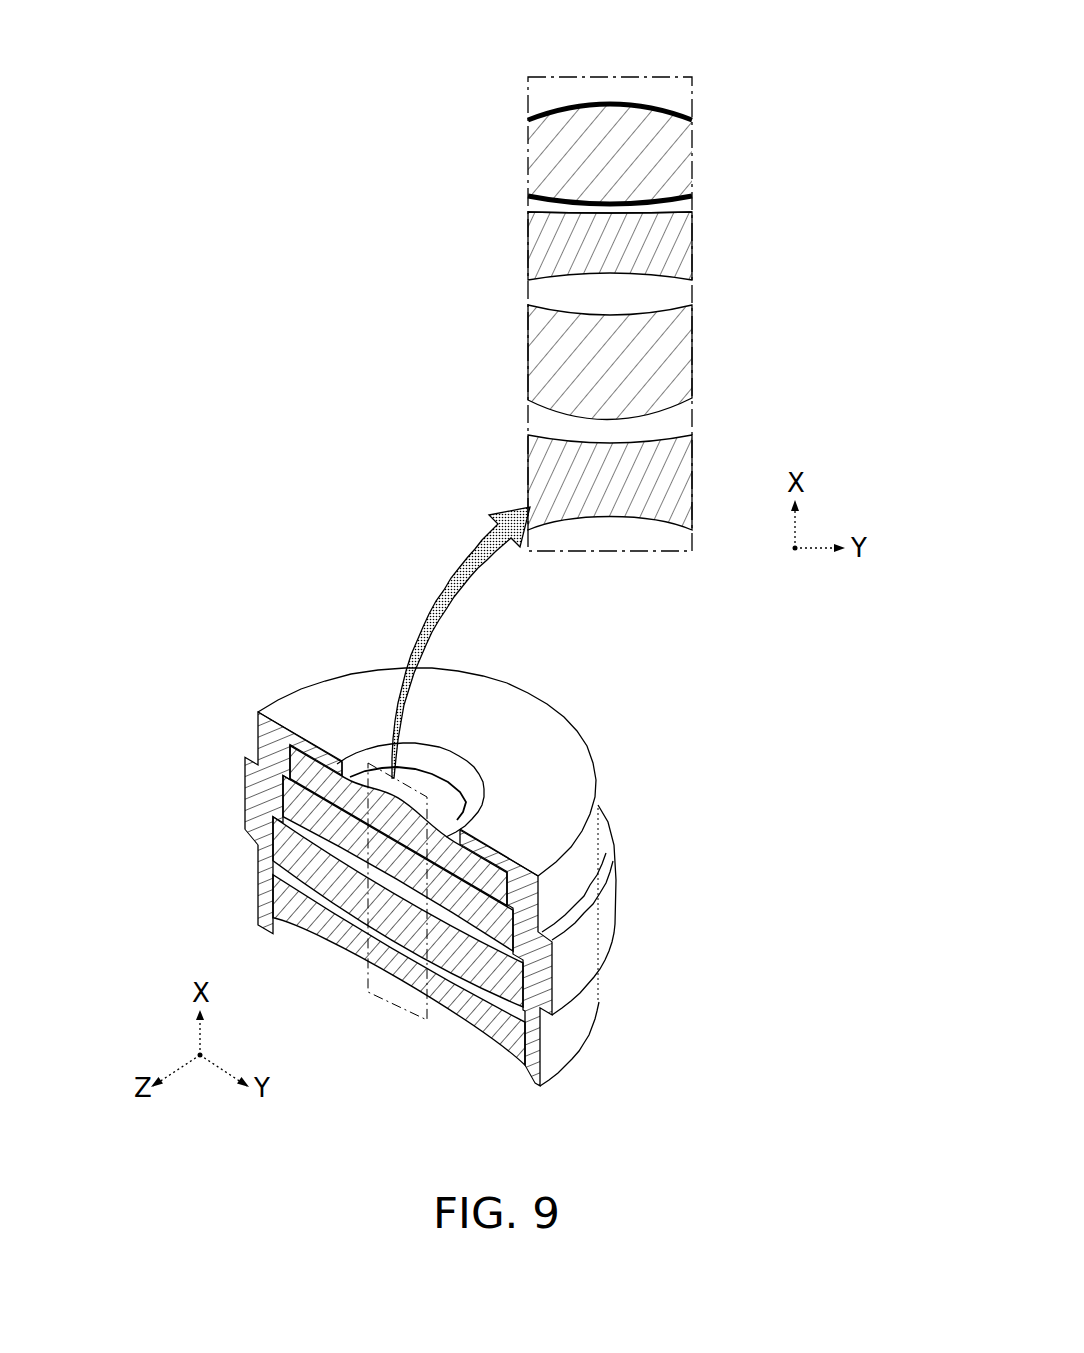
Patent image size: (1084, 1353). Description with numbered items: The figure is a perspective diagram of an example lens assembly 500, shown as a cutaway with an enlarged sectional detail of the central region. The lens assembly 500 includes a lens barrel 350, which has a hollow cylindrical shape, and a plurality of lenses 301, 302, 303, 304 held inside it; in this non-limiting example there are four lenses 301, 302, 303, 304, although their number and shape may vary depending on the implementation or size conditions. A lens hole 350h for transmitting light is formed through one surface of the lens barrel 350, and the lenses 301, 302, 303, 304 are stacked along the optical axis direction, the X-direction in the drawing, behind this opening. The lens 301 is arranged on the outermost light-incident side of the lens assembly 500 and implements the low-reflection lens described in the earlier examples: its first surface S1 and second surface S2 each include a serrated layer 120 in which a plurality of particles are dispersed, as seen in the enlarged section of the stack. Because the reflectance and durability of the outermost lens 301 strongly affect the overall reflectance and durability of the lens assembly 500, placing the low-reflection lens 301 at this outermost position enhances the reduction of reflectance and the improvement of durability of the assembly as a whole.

The serrated layer 120 is at (528, 120).
The first surface S1 is at (684, 207).
The second surface S2 is at (684, 104).
The low-reflection lens 301 is at (321, 770).
The lens 302 is at (291, 803).
The lens 303 is at (456, 952).
The lens 304 is at (499, 1031).
The lens barrel 350 is at (577, 764).
The lens hole 350h is at (452, 797).
The lens assembly 500 is at (318, 570).